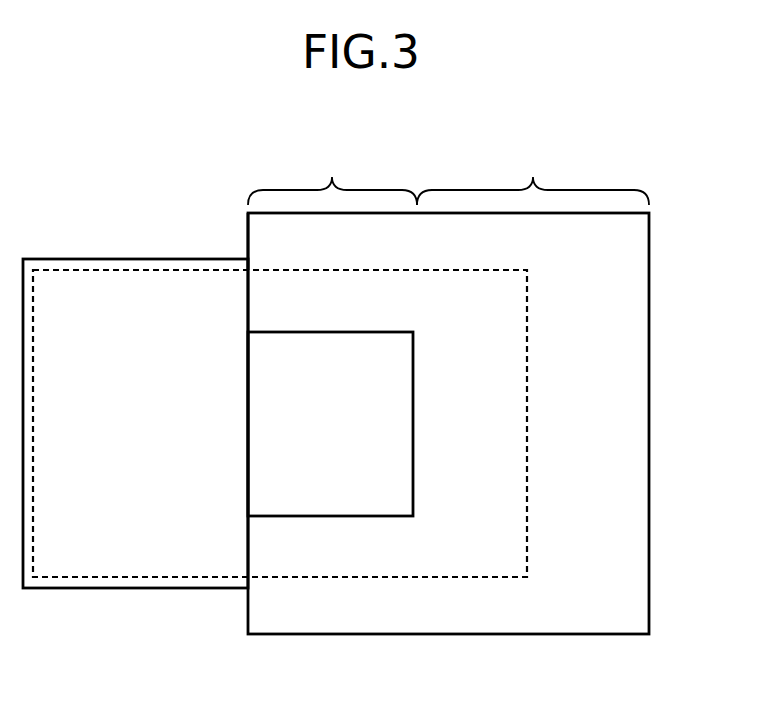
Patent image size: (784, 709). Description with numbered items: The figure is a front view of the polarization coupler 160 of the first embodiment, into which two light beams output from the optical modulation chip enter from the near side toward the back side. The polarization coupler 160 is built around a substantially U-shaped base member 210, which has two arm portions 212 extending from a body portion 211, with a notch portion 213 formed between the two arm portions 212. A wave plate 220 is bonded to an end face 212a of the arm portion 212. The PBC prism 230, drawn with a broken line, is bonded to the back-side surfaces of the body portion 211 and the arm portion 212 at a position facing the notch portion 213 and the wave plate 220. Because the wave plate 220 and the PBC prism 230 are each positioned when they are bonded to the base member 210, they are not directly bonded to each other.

The polarization coupler 160 is at (647, 170).
The base member 210 is at (650, 324).
The body portion 211 is at (533, 176).
The arm portion 212 is at (332, 176).
The end face 212a is at (247, 238).
The notch portion 213 is at (356, 494).
The wave plate 220 is at (58, 258).
The PBC prism 230 is at (476, 578).